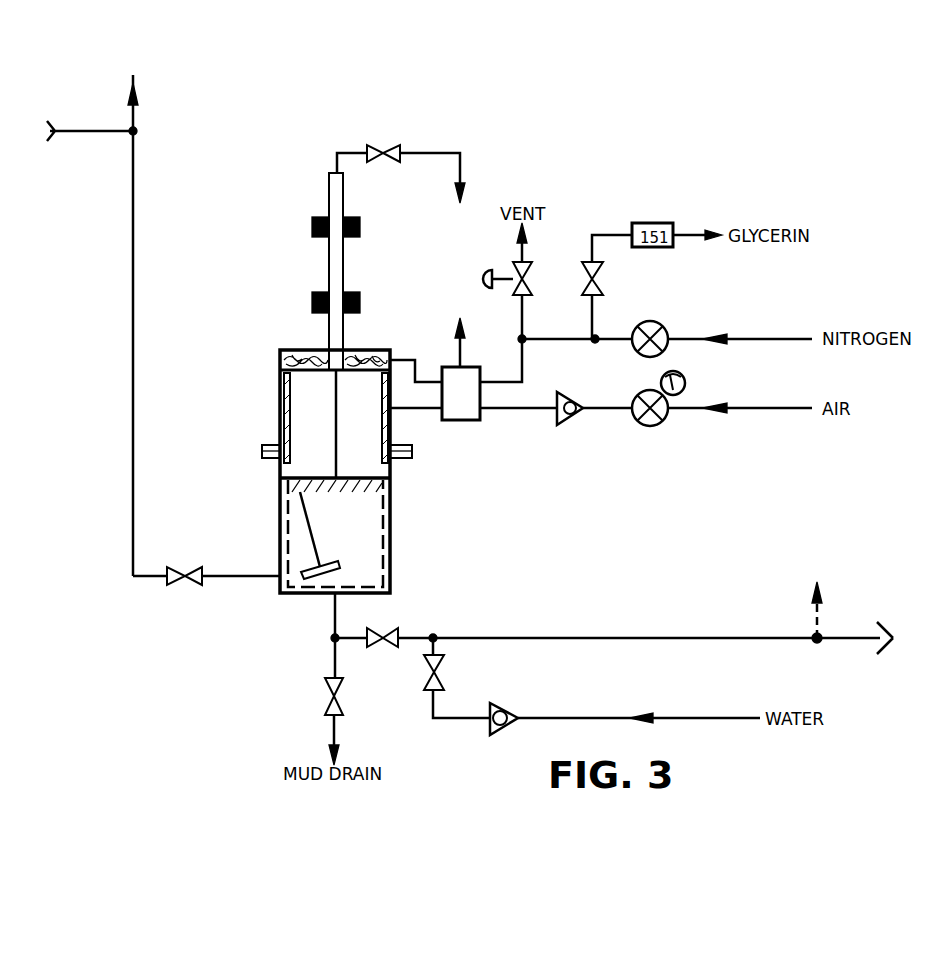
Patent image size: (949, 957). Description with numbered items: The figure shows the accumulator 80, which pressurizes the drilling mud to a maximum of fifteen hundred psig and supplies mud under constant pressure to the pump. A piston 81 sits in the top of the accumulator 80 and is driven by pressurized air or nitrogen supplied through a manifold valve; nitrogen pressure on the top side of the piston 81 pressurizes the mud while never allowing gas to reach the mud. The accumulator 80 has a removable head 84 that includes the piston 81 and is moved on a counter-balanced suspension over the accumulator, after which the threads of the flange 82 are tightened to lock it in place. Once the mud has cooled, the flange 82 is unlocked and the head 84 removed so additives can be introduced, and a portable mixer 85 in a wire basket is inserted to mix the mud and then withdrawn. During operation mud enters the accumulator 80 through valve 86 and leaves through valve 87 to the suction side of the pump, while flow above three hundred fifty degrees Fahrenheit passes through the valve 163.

The valve 163 is at (134, 120).
The accumulator 80 is at (390, 545).
The piston 81 is at (319, 436).
The flange 82 is at (272, 445).
The head 84 is at (286, 418).
The portable mixer 85 is at (318, 565).
The valve 86 is at (185, 576).
The valve 87 is at (382, 628).